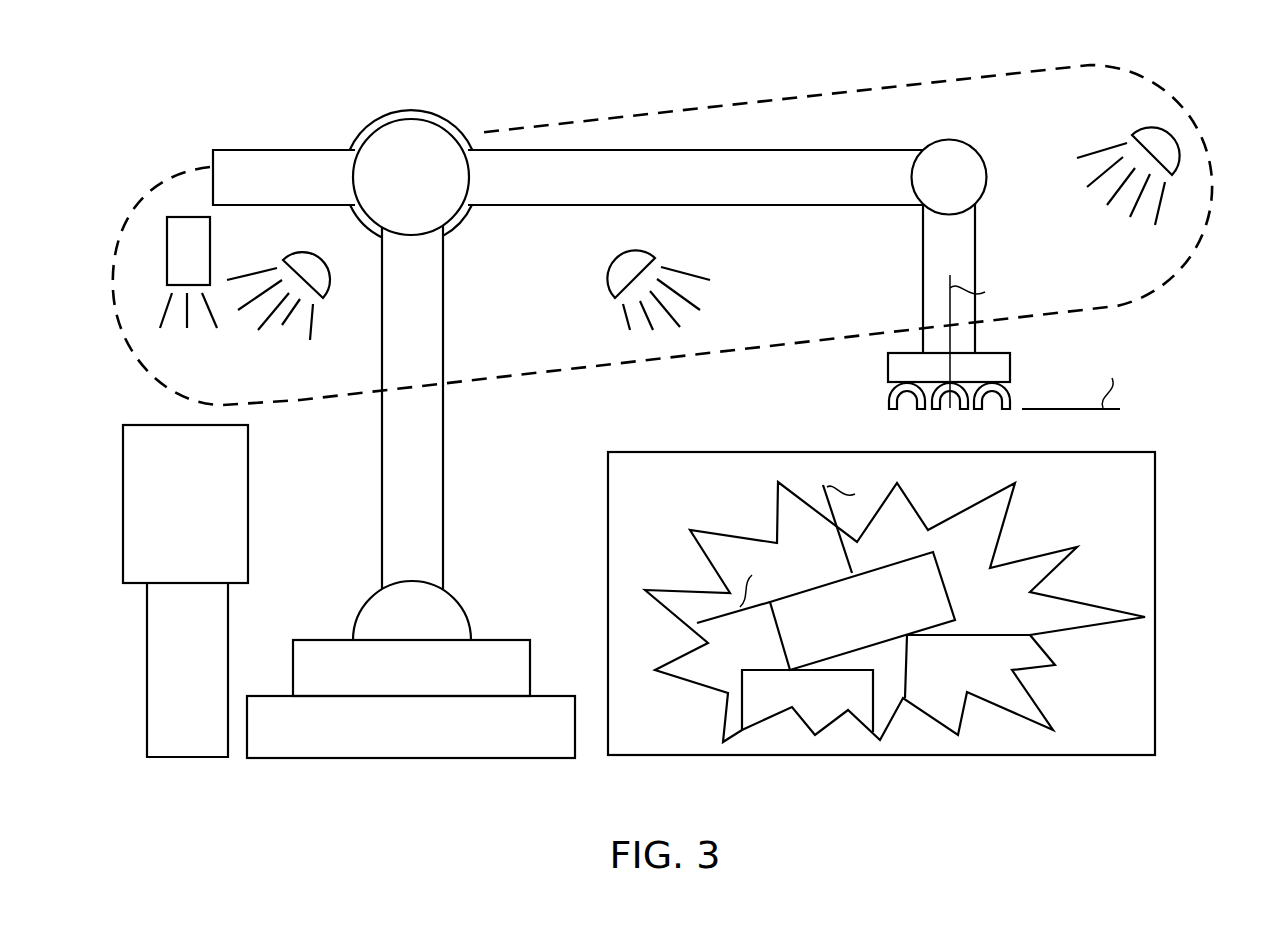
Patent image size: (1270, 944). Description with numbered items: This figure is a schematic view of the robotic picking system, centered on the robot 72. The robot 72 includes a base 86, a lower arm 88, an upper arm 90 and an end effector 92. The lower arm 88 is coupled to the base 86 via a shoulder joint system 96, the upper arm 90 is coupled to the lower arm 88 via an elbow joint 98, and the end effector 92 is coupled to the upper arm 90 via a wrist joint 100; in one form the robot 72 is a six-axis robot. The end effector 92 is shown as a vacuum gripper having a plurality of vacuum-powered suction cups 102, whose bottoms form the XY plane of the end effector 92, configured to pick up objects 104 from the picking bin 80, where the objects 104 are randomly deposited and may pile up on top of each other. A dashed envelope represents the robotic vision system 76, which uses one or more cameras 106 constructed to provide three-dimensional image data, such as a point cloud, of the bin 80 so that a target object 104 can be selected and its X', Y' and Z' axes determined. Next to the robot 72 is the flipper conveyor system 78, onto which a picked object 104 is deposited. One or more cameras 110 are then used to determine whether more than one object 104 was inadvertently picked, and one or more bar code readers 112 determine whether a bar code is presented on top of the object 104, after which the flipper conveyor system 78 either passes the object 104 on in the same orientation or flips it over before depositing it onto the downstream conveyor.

The robot 72 is at (290, 94).
The robotic vision system 76 is at (944, 80).
The flipper conveyor system 78 is at (172, 499).
The picking bin 80 is at (913, 603).
The base 86 is at (397, 739).
The lower arm 88 is at (397, 402).
The upper arm 90 is at (652, 191).
The end effector 92 is at (977, 330).
The shoulder joint system 96 is at (397, 622).
The elbow joint 98 is at (397, 191).
The wrist joint 100 is at (930, 191).
The suction cups 102 is at (888, 388).
The objects 104 is at (840, 621).
The cameras 106 is at (605, 274).
The cameras 110 is at (298, 274).
The bar code readers 112 is at (170, 257).